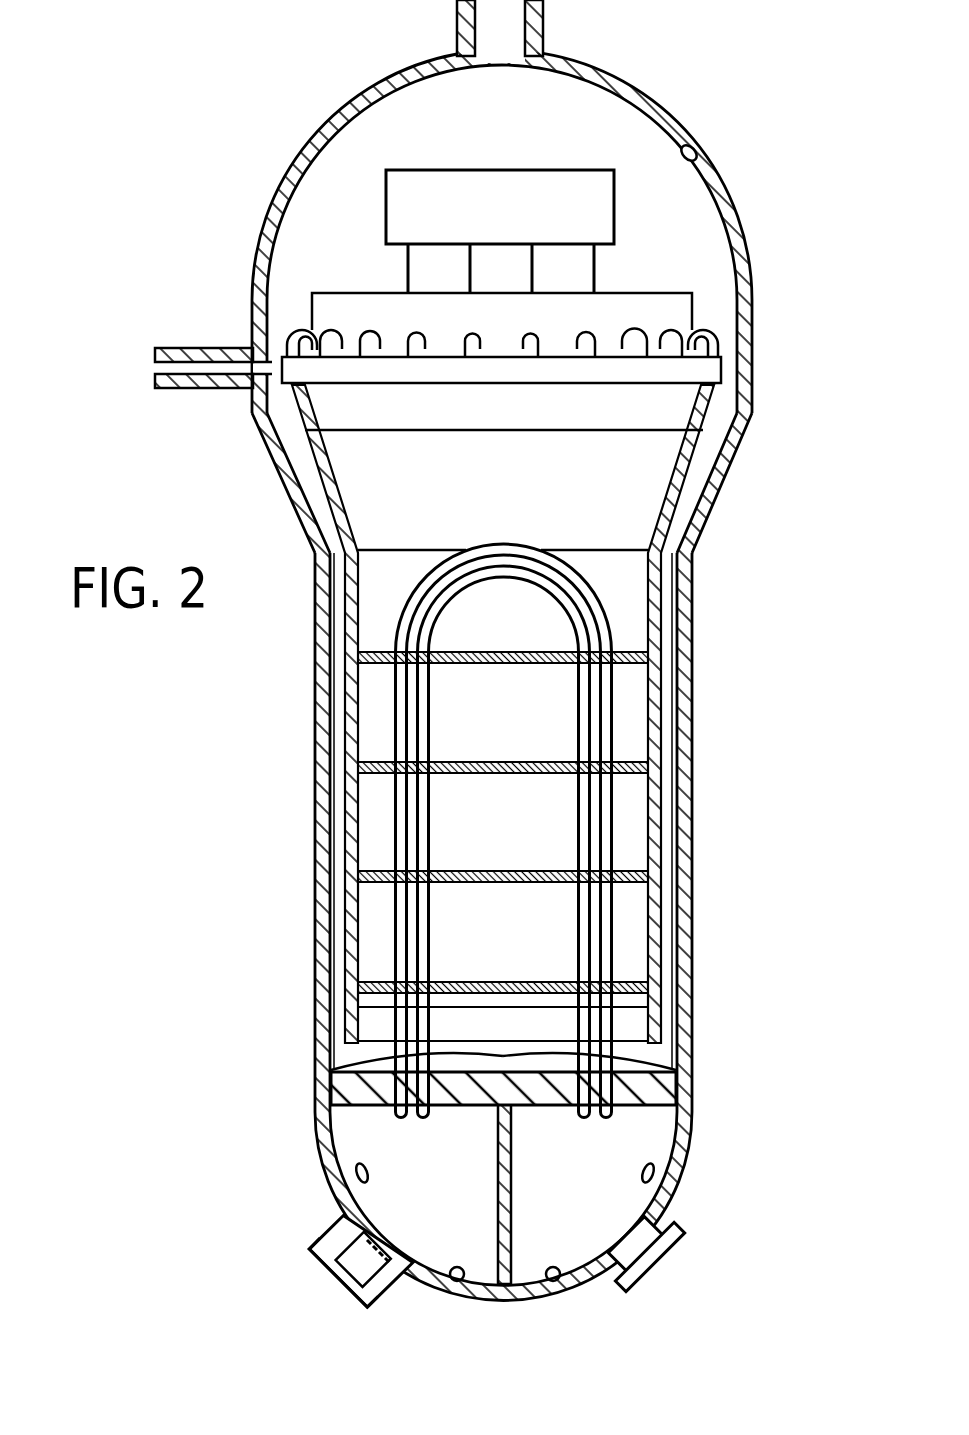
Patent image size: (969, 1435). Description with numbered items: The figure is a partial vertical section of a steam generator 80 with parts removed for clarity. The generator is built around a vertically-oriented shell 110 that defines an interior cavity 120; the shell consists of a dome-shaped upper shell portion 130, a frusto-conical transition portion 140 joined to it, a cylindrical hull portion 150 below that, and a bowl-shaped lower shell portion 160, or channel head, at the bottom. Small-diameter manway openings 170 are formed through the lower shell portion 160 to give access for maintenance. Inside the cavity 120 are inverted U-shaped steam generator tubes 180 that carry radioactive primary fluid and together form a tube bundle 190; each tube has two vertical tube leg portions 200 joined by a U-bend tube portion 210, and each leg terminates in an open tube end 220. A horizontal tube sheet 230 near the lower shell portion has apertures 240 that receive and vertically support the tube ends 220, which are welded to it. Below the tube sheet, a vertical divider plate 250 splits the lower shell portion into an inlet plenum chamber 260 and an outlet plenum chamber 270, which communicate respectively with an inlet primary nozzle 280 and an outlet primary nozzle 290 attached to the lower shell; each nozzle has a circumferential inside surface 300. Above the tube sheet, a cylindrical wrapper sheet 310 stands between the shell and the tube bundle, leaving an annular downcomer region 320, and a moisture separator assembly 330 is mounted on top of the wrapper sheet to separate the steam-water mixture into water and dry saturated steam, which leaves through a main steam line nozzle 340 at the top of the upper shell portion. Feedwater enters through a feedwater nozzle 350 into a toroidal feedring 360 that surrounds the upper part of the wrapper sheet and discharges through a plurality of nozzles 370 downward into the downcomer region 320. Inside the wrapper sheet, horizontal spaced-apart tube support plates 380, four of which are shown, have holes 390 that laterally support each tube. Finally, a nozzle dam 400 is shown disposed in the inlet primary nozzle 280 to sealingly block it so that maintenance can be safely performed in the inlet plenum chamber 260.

The steam generator 80 is at (304, 96).
The shell 110 is at (636, 88).
The cavity 120 is at (700, 152).
The upper shell portion 130 is at (748, 316).
The transition portion 140 is at (705, 507).
The hull portion 150 is at (684, 680).
The lower shell portion 160 is at (683, 1140).
The manway openings 170 is at (370, 1173).
The steam generator tubes 180 is at (600, 716).
The tube bundle 190 is at (612, 832).
The tube leg portions 200 is at (612, 945).
The U-bend tube portion 210 is at (560, 546).
The tube end 220 is at (660, 1066).
The tube sheet 230 is at (332, 1097).
The apertures 240 is at (345, 1063).
The divider plate 250 is at (512, 1221).
The inlet plenum chamber 260 is at (455, 1282).
The outlet plenum chamber 270 is at (558, 1282).
The inlet primary nozzle 280 is at (345, 1212).
The outlet primary nozzle 290 is at (660, 1217).
The inside surface 300 is at (325, 1245).
The wrapper sheet 310 is at (352, 1019).
The downcomer region 320 is at (340, 946).
The moisture separator assembly 330 is at (362, 212).
The main steam line nozzle 340 is at (458, 8).
The feedwater nozzle 350 is at (195, 390).
The feedring 360 is at (400, 370).
The nozzles 370 is at (365, 330).
The tube support plates 380 is at (347, 641).
The holes 390 is at (375, 758).
The nozzle dam 400 is at (396, 1228).